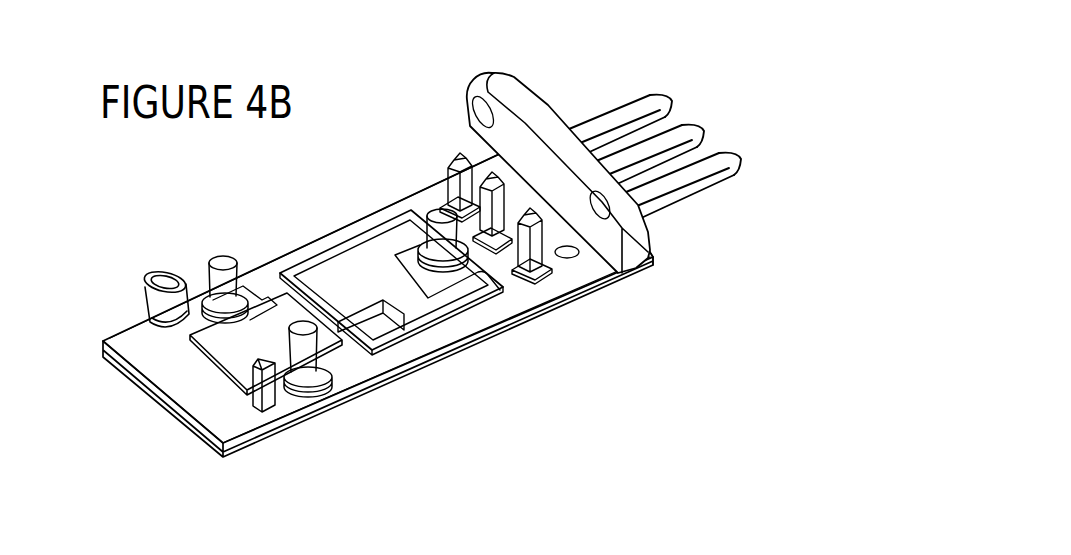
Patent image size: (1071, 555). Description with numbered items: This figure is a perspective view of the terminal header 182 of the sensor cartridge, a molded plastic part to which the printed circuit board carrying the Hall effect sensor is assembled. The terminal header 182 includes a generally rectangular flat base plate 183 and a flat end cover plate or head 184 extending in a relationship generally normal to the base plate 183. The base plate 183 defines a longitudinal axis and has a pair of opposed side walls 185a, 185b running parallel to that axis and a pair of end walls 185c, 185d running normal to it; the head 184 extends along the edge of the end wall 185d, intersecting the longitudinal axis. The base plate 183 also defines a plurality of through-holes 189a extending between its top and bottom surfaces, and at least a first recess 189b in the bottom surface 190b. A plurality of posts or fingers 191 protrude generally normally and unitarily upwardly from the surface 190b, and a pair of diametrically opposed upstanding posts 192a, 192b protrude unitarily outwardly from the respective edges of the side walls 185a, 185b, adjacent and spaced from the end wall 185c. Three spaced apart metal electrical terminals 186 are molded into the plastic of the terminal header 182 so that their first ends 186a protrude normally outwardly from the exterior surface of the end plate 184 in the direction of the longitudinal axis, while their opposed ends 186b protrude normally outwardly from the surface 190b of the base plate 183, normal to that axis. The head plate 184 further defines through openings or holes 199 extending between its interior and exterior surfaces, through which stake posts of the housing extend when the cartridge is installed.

The terminal header 182 is at (470, 348).
The base plate 183 is at (528, 314).
The end cover plate 184 is at (550, 112).
The side wall 185a is at (355, 222).
The side wall 185b is at (402, 363).
The end wall 185c is at (183, 402).
The end wall 185d is at (651, 258).
The electrical terminals 186 is at (733, 147).
The first ends of terminals 186a is at (640, 106).
The opposed ends of terminals 186b is at (490, 185).
The through-holes 189a is at (265, 315).
The first recess 189b is at (455, 310).
The bottom surface 190b is at (410, 205).
The posts 191 is at (234, 283).
The upstanding post 192a is at (152, 307).
The upstanding post 192b is at (198, 425).
The through openings 199 is at (486, 96).